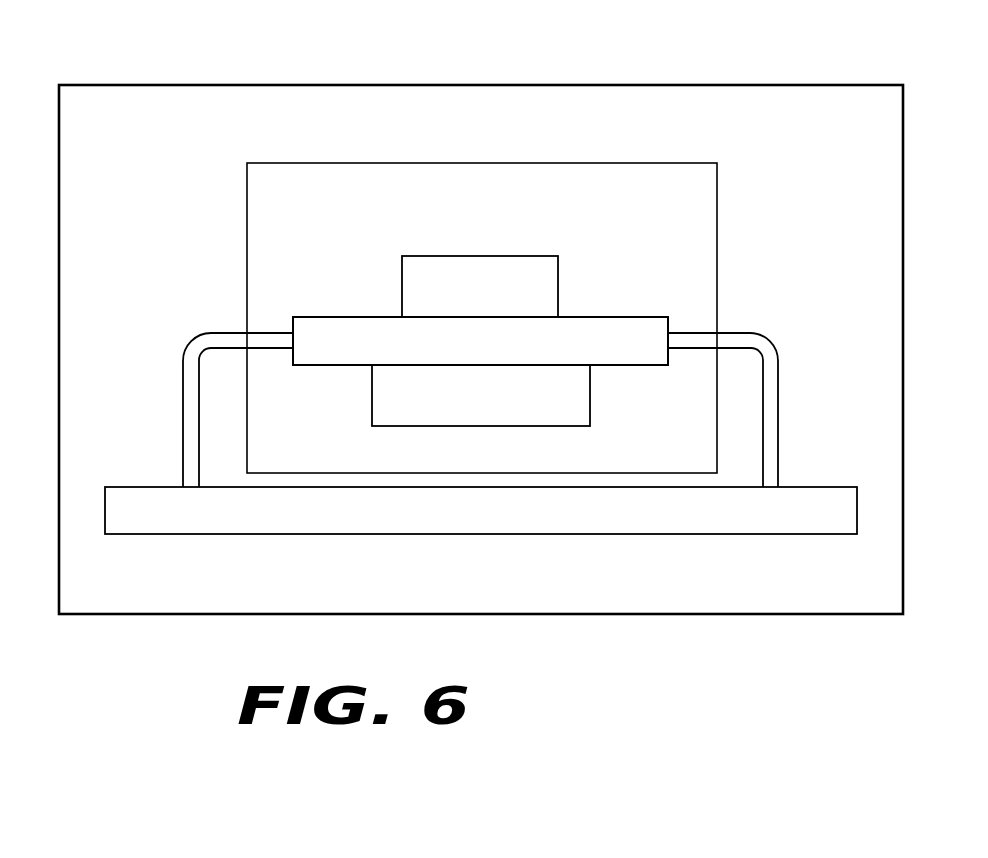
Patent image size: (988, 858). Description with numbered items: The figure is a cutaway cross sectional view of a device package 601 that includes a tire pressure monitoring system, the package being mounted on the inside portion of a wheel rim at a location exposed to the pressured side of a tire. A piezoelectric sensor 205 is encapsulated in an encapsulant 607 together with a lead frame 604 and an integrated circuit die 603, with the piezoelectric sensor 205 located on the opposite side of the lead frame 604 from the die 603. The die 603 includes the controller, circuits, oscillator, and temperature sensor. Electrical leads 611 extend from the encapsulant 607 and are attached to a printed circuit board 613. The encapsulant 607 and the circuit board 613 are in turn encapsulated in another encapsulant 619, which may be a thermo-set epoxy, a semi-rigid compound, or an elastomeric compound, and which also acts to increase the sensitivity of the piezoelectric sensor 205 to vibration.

The device package 601 is at (125, 57).
The encapsulant 607 is at (631, 170).
The piezoelectric sensor 205 is at (506, 258).
The lead frame 604 is at (626, 330).
The integrated circuit die 603 is at (590, 405).
The electrical leads 611 is at (778, 383).
The printed circuit board 613 is at (821, 493).
The encapsulant 619 is at (252, 596).